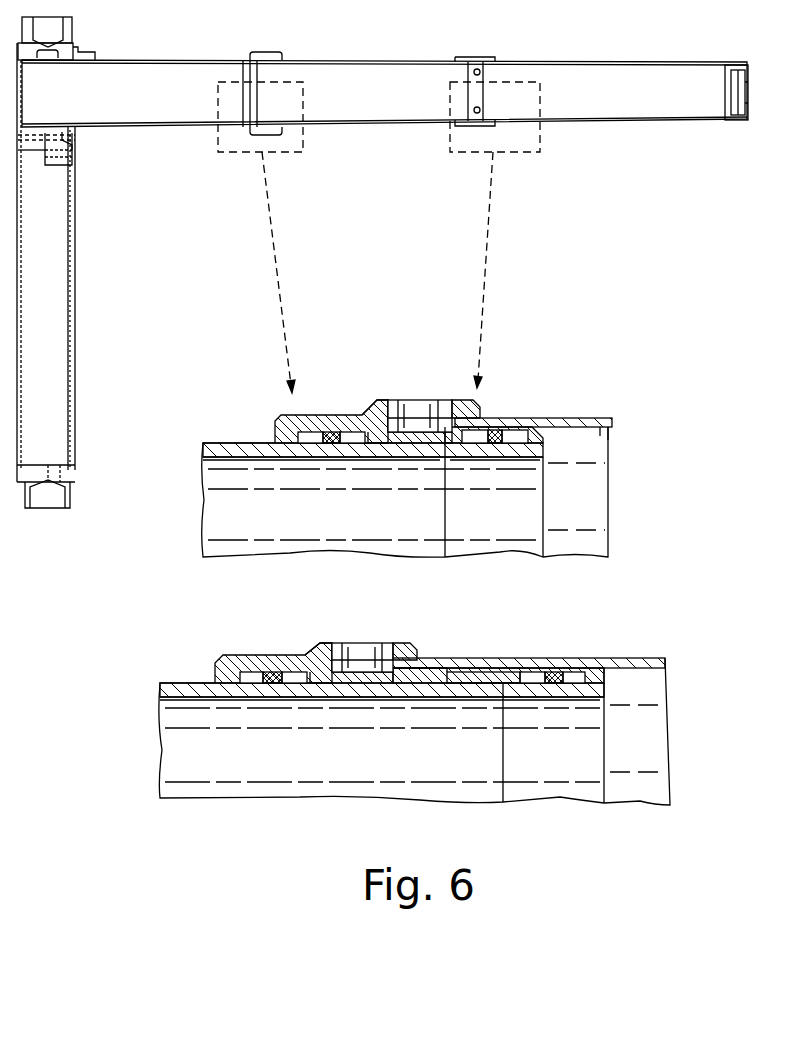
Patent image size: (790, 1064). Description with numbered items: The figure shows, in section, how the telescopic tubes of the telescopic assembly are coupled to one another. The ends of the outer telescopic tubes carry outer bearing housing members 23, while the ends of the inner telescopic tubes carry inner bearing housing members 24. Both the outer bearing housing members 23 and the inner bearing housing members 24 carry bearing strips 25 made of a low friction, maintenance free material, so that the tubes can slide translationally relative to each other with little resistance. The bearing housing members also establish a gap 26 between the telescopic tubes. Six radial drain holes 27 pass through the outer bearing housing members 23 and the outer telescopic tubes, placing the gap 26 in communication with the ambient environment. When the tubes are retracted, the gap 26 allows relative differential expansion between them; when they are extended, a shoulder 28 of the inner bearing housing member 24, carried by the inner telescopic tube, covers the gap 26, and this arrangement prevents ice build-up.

The outer bearing housing member 23 is at (305, 437).
The inner bearing housing member 24 is at (535, 447).
The bearing strip 25 is at (331, 438).
The gap 26 is at (302, 437).
The radial drain hole 27 is at (415, 400).
The shoulder 28 is at (433, 423).